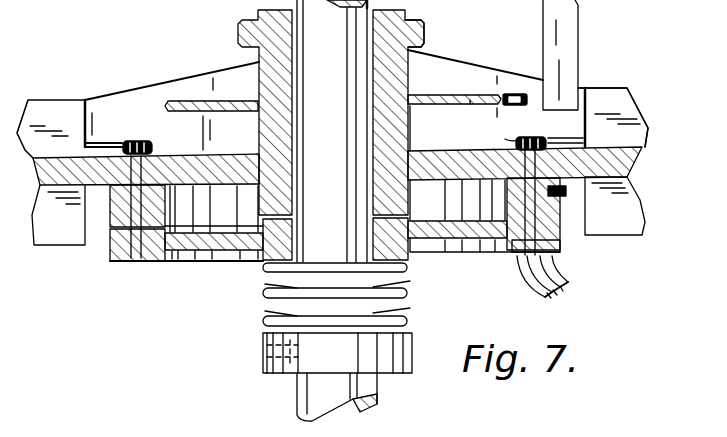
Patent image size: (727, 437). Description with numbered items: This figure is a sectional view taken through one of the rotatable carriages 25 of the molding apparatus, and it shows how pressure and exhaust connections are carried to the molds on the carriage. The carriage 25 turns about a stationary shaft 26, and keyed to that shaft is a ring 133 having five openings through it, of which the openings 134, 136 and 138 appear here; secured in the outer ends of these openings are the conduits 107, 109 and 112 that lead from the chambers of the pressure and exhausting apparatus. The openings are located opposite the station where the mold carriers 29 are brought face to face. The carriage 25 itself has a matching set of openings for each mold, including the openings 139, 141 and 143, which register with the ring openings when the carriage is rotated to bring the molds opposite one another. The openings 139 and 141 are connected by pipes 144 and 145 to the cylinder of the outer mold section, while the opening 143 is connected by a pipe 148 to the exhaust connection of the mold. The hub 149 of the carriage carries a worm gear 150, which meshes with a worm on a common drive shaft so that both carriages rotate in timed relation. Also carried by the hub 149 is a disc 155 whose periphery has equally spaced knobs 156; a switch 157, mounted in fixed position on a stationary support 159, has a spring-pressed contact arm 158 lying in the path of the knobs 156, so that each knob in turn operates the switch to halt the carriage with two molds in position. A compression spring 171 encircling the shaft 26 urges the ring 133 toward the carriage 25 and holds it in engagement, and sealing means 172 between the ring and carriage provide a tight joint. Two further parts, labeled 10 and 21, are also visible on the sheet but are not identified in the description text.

The housing 10 is at (190, 127).
The upper plate 21 is at (213, 60).
The rotatable carriage 25 is at (421, 162).
The stationary shaft 26 is at (336, 85).
The mold carriers 29 is at (612, 100).
The conduit 107 is at (555, 268).
The conduit 109 is at (530, 288).
The conduit 112 is at (547, 292).
The ring 133 is at (128, 262).
The opening 134 is at (560, 223).
The opening 136 is at (511, 257).
The opening 138 is at (555, 232).
The opening 139 is at (557, 203).
The opening 141 is at (500, 189).
The opening 143 is at (560, 192).
The pipe 144 is at (577, 121).
The pipe 145 is at (505, 140).
The pipe 148 is at (535, 138).
The hub 149 is at (280, 130).
The worm gear 150 is at (422, 26).
The disc 155 is at (190, 100).
The knob 156 is at (518, 82).
The switch 157 is at (533, 85).
The spring-pressed contact arm 158 is at (500, 100).
The stationary support 159 is at (566, 34).
The compression spring 171 is at (408, 295).
The sealing means 172 is at (170, 217).